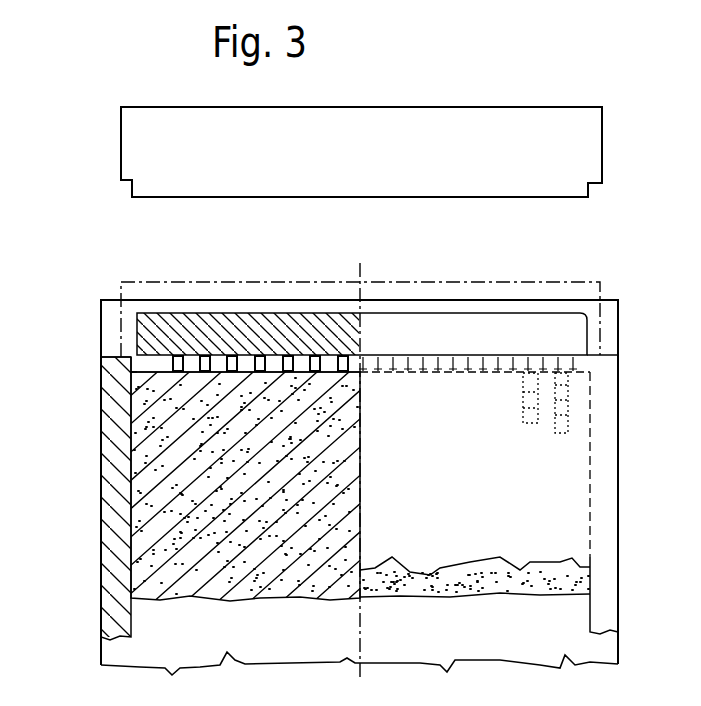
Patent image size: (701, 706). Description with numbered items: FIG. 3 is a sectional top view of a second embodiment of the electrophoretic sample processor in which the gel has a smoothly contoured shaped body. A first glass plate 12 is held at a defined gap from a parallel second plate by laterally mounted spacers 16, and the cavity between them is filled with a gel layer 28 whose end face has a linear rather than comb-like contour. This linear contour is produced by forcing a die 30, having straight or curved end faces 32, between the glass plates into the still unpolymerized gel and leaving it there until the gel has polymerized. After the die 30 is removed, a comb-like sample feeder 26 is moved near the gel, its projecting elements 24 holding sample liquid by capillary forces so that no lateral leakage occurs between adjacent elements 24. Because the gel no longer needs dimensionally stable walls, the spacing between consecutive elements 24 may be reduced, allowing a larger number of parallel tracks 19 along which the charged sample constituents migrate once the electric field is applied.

The first glass plate 12 is at (108, 320).
The spacer 16 is at (112, 585).
The tracks 19 is at (540, 423).
The projecting elements 24 is at (218, 358).
The comb-like sample feeder 26 is at (415, 335).
The gel layer 28 is at (165, 467).
The die 30 is at (510, 130).
The end face of die 32 is at (545, 199).